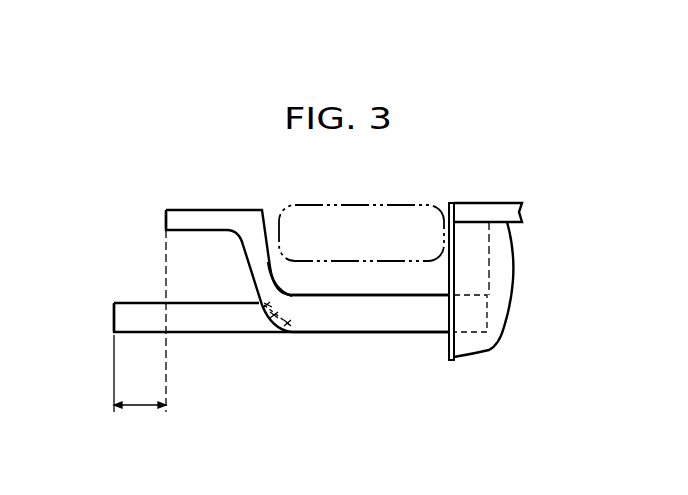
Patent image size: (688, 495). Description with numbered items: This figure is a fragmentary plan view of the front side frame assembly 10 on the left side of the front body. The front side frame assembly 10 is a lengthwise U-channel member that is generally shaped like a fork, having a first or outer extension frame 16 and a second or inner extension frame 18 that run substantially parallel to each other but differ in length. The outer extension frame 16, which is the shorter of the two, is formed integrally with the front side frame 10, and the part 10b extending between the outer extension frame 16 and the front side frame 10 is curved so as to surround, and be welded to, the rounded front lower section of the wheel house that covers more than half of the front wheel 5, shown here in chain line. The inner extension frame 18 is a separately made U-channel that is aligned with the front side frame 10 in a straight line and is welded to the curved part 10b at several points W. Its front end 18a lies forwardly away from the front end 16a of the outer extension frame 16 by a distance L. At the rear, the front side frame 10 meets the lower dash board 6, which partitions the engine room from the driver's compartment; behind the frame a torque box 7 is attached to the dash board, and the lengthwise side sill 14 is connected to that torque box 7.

The front wheel 5 is at (373, 208).
The lower dash board 6 is at (445, 343).
The torque box 7 is at (480, 273).
The front side frame assembly 10 is at (364, 337).
The curved part of front side frame 10b is at (267, 268).
The side sill 14 is at (487, 212).
The outer extension frame 16 is at (205, 218).
The front end of outer extension frame 16a is at (164, 222).
The inner extension frame 18 is at (208, 334).
The front end of inner extension frame 18a is at (112, 321).
The welding points W is at (270, 305).
The distance L is at (140, 321).